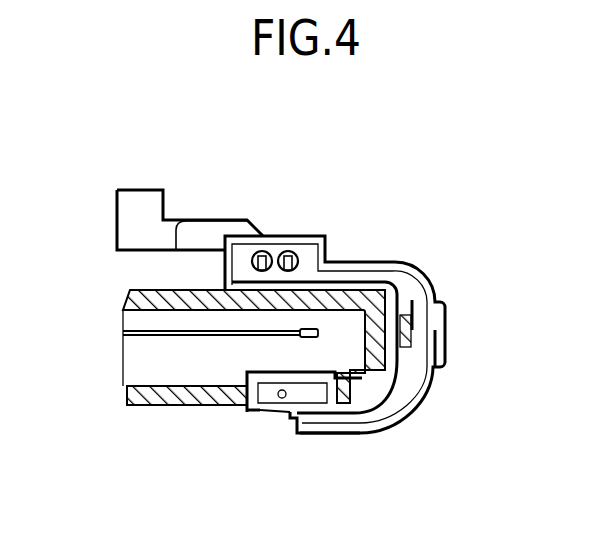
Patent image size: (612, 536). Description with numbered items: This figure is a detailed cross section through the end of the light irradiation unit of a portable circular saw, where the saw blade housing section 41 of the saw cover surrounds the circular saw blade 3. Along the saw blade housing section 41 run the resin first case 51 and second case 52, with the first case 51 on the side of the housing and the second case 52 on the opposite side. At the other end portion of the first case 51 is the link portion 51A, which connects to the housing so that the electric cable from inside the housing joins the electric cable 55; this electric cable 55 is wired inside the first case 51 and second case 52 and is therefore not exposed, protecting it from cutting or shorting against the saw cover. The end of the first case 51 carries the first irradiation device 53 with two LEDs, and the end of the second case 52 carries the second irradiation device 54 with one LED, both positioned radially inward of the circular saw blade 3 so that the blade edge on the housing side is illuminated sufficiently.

The circular saw blade 3 is at (153, 337).
The saw blade housing section 41 is at (160, 397).
The first case 51 is at (410, 267).
The link portion 51A is at (203, 230).
The second case 52 is at (333, 432).
The first irradiation device 53 is at (263, 248).
The second irradiation device 54 is at (280, 408).
The electric cable 55 is at (413, 322).